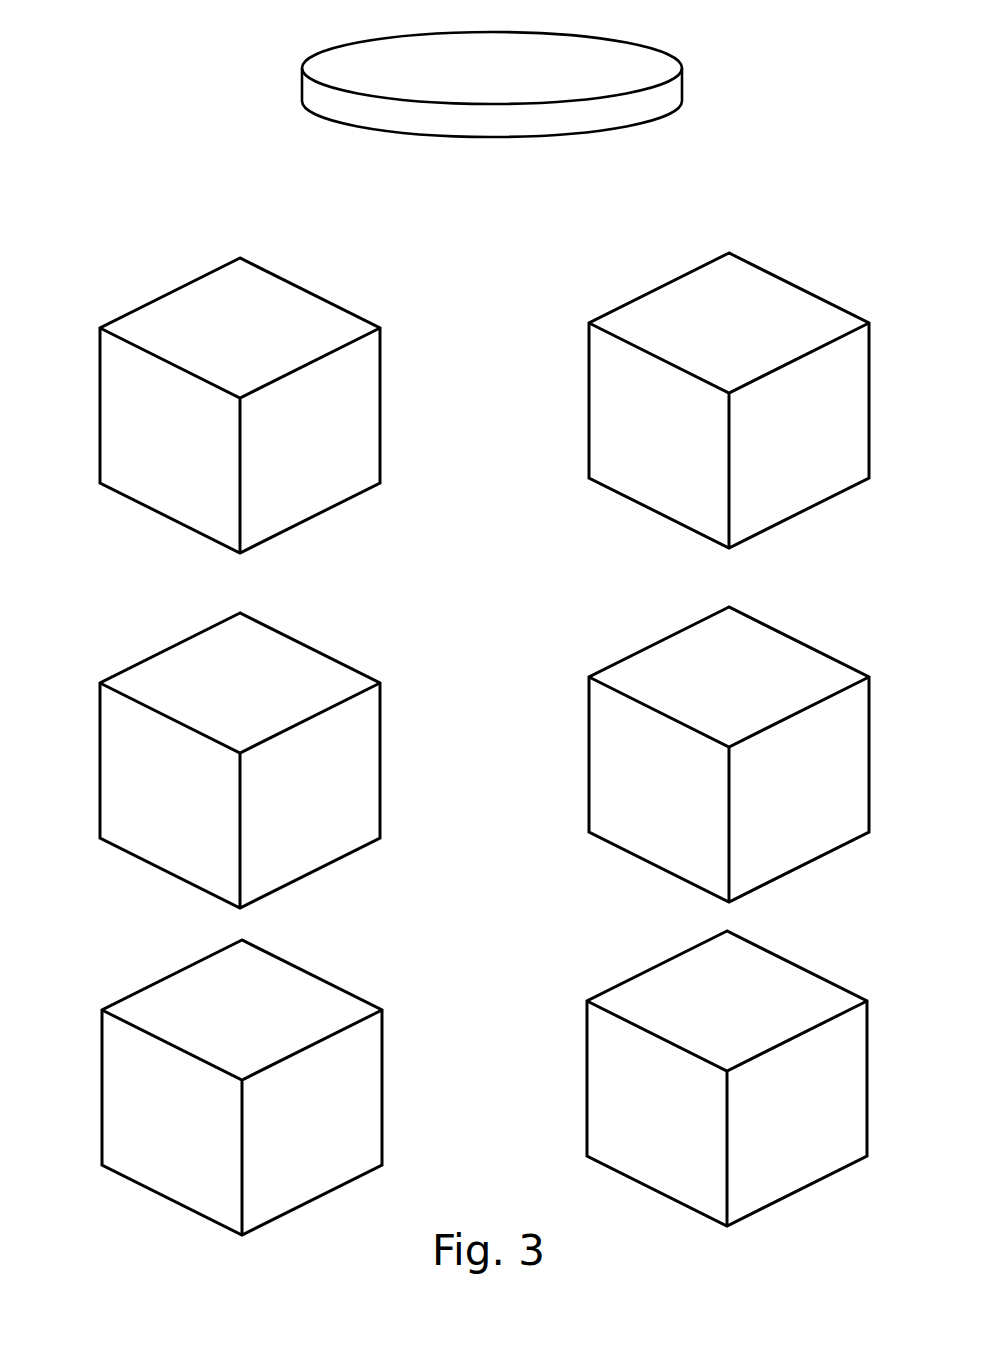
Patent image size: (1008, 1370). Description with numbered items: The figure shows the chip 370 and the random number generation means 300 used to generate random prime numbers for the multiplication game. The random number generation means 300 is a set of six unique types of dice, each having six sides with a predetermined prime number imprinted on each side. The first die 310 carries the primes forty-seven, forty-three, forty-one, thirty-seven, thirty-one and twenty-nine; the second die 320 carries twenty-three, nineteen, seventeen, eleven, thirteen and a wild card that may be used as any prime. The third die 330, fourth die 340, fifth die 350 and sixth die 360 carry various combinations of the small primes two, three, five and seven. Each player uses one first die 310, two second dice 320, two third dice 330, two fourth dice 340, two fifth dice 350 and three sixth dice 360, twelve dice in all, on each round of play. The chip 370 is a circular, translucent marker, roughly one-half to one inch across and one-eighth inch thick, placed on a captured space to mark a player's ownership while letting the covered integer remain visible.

The random number generation means 300 is at (205, 166).
The first die 310 is at (323, 292).
The second die 320 is at (800, 280).
The third die 330 is at (318, 647).
The fourth die 340 is at (807, 643).
The fifth die 350 is at (320, 978).
The sixth die 360 is at (810, 967).
The chip 370 is at (645, 42).